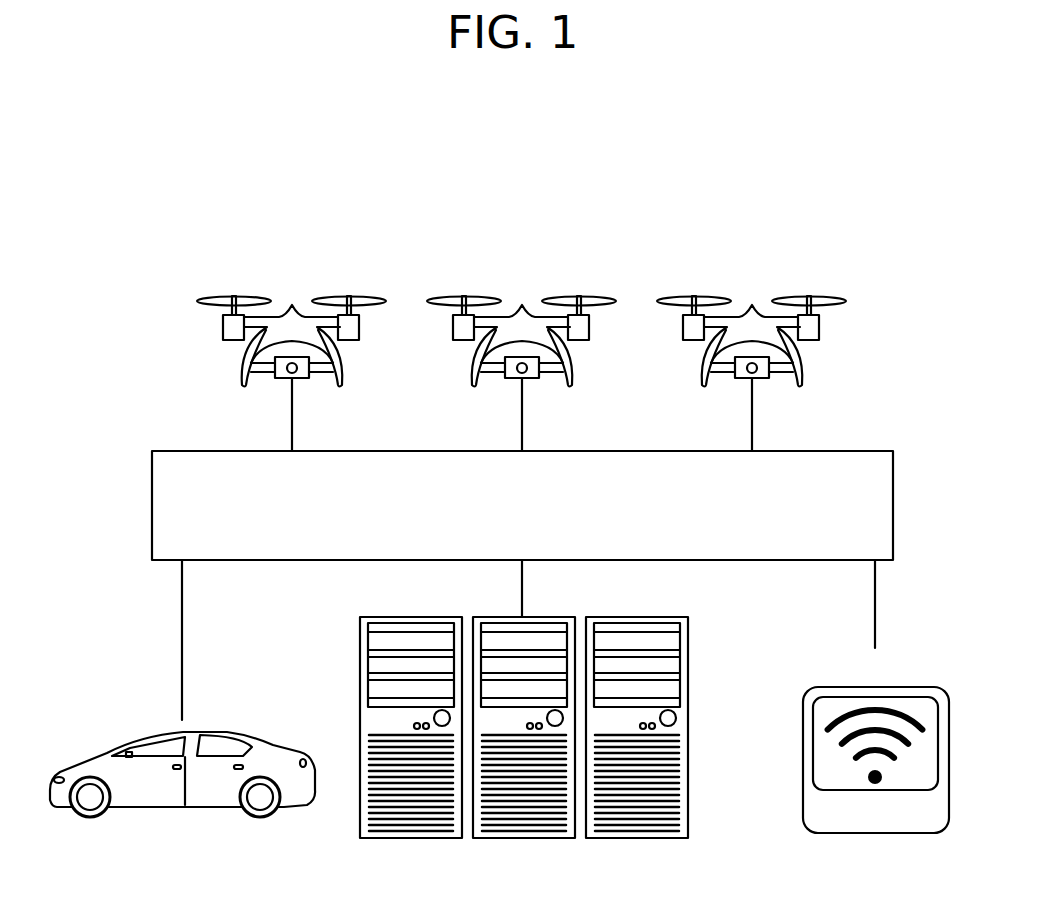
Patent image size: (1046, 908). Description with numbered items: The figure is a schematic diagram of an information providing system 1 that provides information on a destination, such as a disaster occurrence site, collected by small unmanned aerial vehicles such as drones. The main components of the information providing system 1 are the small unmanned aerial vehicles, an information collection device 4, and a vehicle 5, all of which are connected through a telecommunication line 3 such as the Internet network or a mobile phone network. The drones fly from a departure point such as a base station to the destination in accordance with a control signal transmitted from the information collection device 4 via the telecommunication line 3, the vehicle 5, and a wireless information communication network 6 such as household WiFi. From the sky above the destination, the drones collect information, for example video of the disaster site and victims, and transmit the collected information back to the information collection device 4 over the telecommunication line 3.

The information providing system 1 is at (879, 168).
The telecommunication line 3 is at (895, 502).
The information collection device 4 is at (652, 838).
The vehicle 5 is at (252, 732).
The wireless information communication network 6 is at (870, 835).